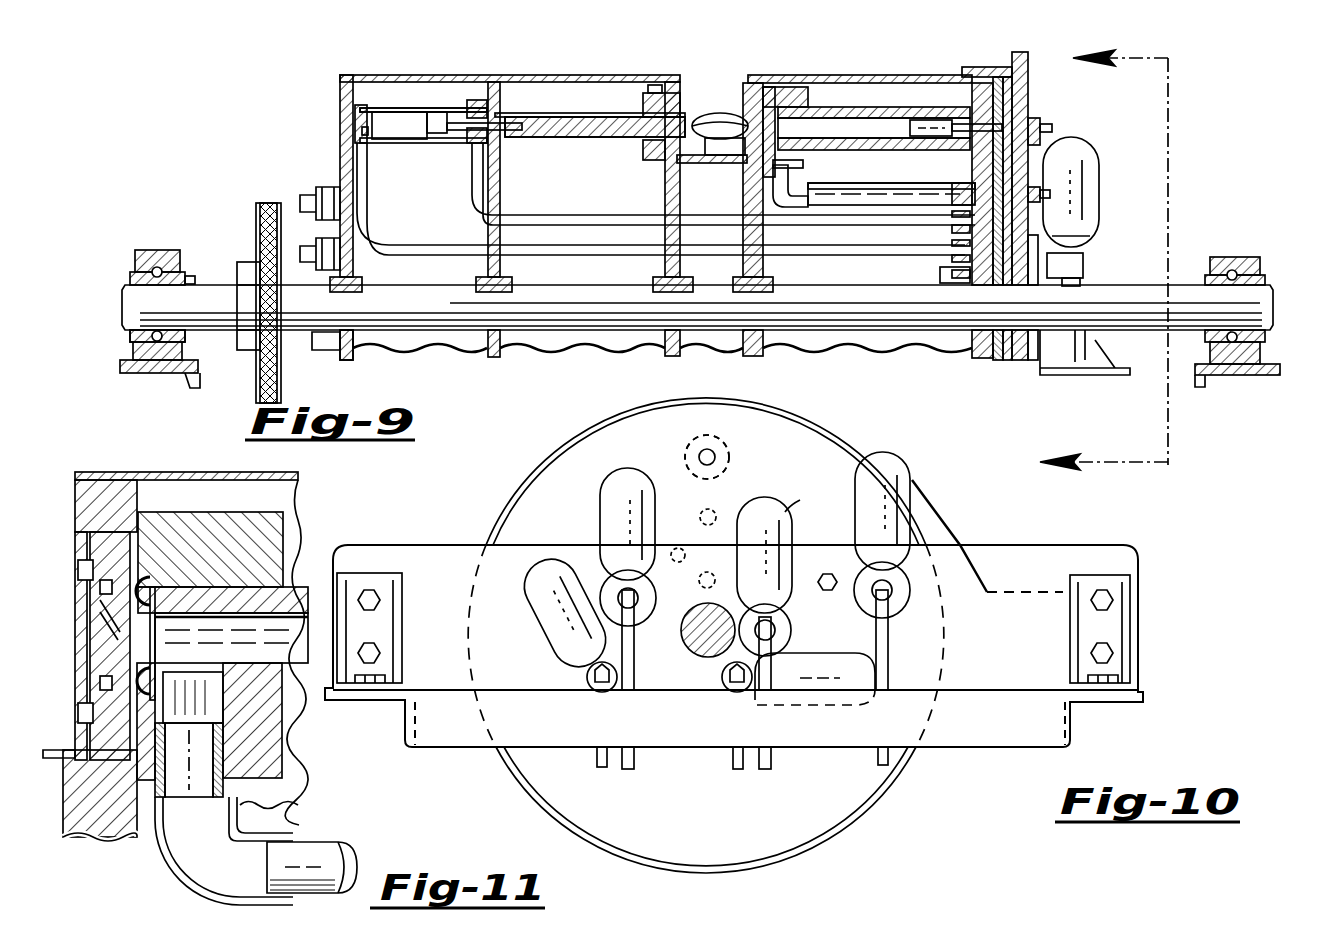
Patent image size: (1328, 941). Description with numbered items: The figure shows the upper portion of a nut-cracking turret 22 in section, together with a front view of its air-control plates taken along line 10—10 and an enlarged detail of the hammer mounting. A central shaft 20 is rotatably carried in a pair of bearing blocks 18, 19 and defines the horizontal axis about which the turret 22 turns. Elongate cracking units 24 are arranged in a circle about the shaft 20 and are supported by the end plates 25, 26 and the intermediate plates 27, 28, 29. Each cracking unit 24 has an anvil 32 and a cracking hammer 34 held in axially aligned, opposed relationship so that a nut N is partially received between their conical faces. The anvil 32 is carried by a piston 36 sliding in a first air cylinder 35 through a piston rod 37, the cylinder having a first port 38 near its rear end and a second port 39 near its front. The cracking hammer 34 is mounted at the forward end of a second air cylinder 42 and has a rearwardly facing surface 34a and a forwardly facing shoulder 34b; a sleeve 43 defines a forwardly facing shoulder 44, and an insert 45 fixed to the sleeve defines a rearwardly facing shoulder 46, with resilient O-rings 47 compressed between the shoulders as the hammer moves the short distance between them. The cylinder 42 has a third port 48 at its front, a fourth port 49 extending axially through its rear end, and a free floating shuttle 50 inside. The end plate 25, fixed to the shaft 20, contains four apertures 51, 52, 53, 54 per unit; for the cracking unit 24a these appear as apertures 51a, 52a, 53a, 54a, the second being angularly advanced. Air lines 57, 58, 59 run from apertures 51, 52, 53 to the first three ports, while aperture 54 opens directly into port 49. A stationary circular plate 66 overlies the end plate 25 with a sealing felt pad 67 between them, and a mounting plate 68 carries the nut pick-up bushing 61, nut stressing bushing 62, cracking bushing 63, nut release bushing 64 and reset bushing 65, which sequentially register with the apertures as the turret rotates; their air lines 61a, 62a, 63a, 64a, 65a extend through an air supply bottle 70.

In FIG. 9, the section line 10— 10 is at (1132, 264).
In FIG. 9, the bearing block 18 is at (1240, 235).
In FIG. 9, the bearing block 19 is at (165, 233).
In FIG. 9, the central shaft 20 is at (1140, 288).
In FIG. 10, the central shaft 20 is at (682, 636).
In FIG. 9, the turret 22 is at (330, 112).
In FIG. 9, the cracking unit 24 is at (588, 118).
In FIG. 10, the cracking unit 24a is at (685, 456).
In FIG. 9, the end plate 25 is at (977, 358).
In FIG. 9, the end plate 26 is at (354, 365).
In FIG. 9, the intermediate plate 27 is at (763, 354).
In FIG. 9, the intermediate plate 28 is at (667, 356).
In FIG. 9, the intermediate plate 29 is at (495, 356).
In FIG. 9, the anvil 32 is at (578, 137).
In FIG. 9, the cracking hammer 34 is at (735, 160).
In FIG. 11, the cracking hammer 34 is at (148, 635).
In FIG. 11, the rearwardly facing surface 34a is at (223, 601).
In FIG. 11, the forwardly facing shoulder 34b is at (90, 795).
In FIG. 9, the cylinder housing 35 is at (402, 107).
In FIG. 9, the piston 36 is at (427, 140).
In FIG. 9, the piston rod 37 is at (500, 125).
In FIG. 9, the first port 38 is at (396, 140).
In FIG. 9, the second port 39 is at (465, 140).
In FIG. 9, the second air cylinder 42 is at (842, 107).
In FIG. 11, the second air cylinder 42 is at (310, 555).
In FIG. 9, the sleeve 43 is at (788, 92).
In FIG. 11, the sleeve 43 is at (213, 487).
In FIG. 11, the forwardly facing shoulder 44 is at (145, 588).
In FIG. 11, the insert 45 is at (117, 575).
In FIG. 11, the rearwardly facing shoulder 46 is at (117, 548).
In FIG. 11, the resilient O-rings 47 is at (120, 670).
In FIG. 11, the third port 48 is at (211, 700).
In FIG. 9, the fourth port 49 is at (942, 120).
In FIG. 9, the free floating shuttle 50 is at (891, 169).
In FIG. 9, the aperture 51 is at (943, 258).
In FIG. 10, the aperture 51a is at (698, 582).
In FIG. 9, the aperture 52 is at (922, 203).
In FIG. 10, the aperture 52a is at (680, 549).
In FIG. 9, the aperture 53 is at (975, 192).
In FIG. 10, the aperture 53a is at (720, 512).
In FIG. 9, the aperture 54 is at (1028, 82).
In FIG. 10, the aperture 54a is at (704, 437).
In FIG. 9, the air line 57 is at (854, 255).
In FIG. 9, the air line 58 is at (854, 222).
In FIG. 9, the air line 59 is at (847, 193).
In FIG. 11, the air line 59 is at (342, 857).
In FIG. 10, the nut pick-up bushing 61 is at (710, 695).
In FIG. 10, the air line 61a is at (735, 766).
In FIG. 10, the nut stressing bushing 62 is at (794, 625).
In FIG. 10, the air line 62a is at (772, 767).
In FIG. 9, the cracking bushing 63 is at (1038, 117).
In FIG. 10, the cracking bushing 63 is at (902, 600).
In FIG. 9, the air line 63a is at (1048, 128).
In FIG. 10, the air line 63a is at (888, 665).
In FIG. 10, the nut release bushing 64 is at (608, 595).
In FIG. 10, the air line 64a is at (634, 768).
In FIG. 10, the reset bushing 65 is at (565, 677).
In FIG. 10, the air line 65a is at (598, 760).
In FIG. 9, the circular plate 66 is at (1013, 360).
In FIG. 10, the circular plate 66 is at (560, 465).
In FIG. 9, the felt pad 67 is at (983, 364).
In FIG. 9, the mounting plate 68 is at (1035, 362).
In FIG. 10, the mounting plate 68 is at (440, 545).
In FIG. 9, the air supply bottle 70 is at (1095, 188).
In FIG. 10, the air supply bottle 70 is at (787, 500).
In FIG. 9, the nut N is at (723, 117).